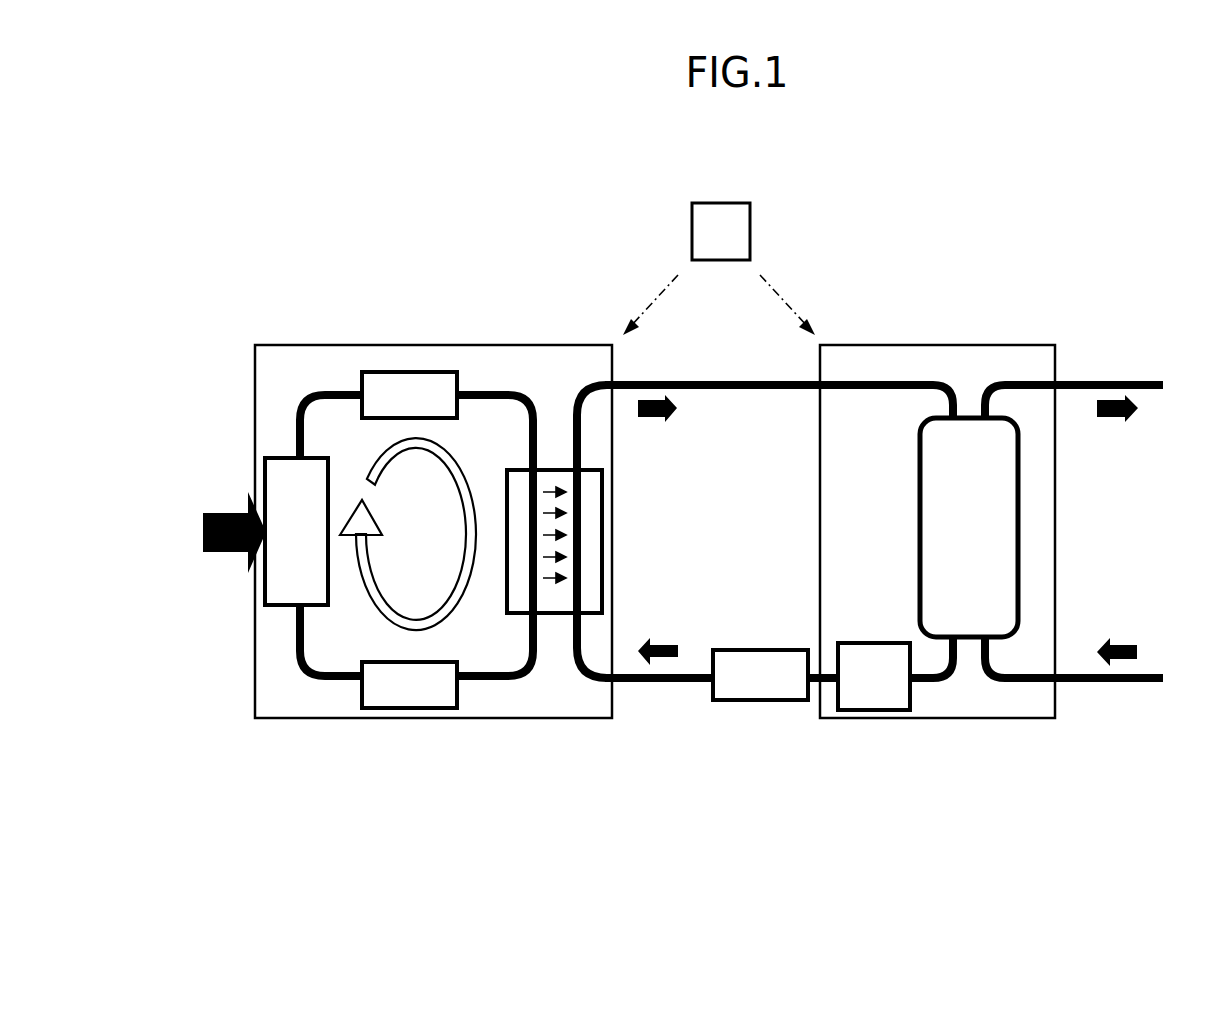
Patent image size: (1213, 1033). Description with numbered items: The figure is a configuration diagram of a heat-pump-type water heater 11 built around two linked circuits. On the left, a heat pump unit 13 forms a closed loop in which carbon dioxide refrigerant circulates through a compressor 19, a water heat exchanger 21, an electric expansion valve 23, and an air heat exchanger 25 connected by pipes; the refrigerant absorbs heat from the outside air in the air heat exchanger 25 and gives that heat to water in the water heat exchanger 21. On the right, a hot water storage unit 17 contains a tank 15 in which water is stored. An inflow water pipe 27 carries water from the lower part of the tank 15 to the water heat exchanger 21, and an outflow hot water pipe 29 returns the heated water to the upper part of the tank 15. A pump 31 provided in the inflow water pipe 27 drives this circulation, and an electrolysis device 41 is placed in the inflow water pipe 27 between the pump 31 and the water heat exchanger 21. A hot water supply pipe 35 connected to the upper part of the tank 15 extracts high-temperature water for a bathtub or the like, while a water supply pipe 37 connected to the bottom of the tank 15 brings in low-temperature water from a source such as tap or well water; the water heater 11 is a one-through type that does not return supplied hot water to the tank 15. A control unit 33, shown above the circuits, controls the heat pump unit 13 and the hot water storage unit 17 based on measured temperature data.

The heat-pump-type water heater 11 is at (832, 192).
The heat pump unit 13 is at (510, 345).
The tank 15 is at (1018, 527).
The hot water storage unit 17 is at (957, 345).
The compressor 19 is at (393, 372).
The water heat exchanger 21 is at (602, 526).
The electric expansion valve 23 is at (430, 710).
The air heat exchanger 25 is at (280, 607).
The inflow water pipe 27 is at (660, 681).
The outflow hot water pipe 29 is at (693, 383).
The pump 31 is at (878, 712).
The control unit 33 is at (692, 225).
The hot water supply pipe 35 is at (1083, 380).
The water supply pipe 37 is at (1085, 682).
The electrolysis device 41 is at (753, 702).